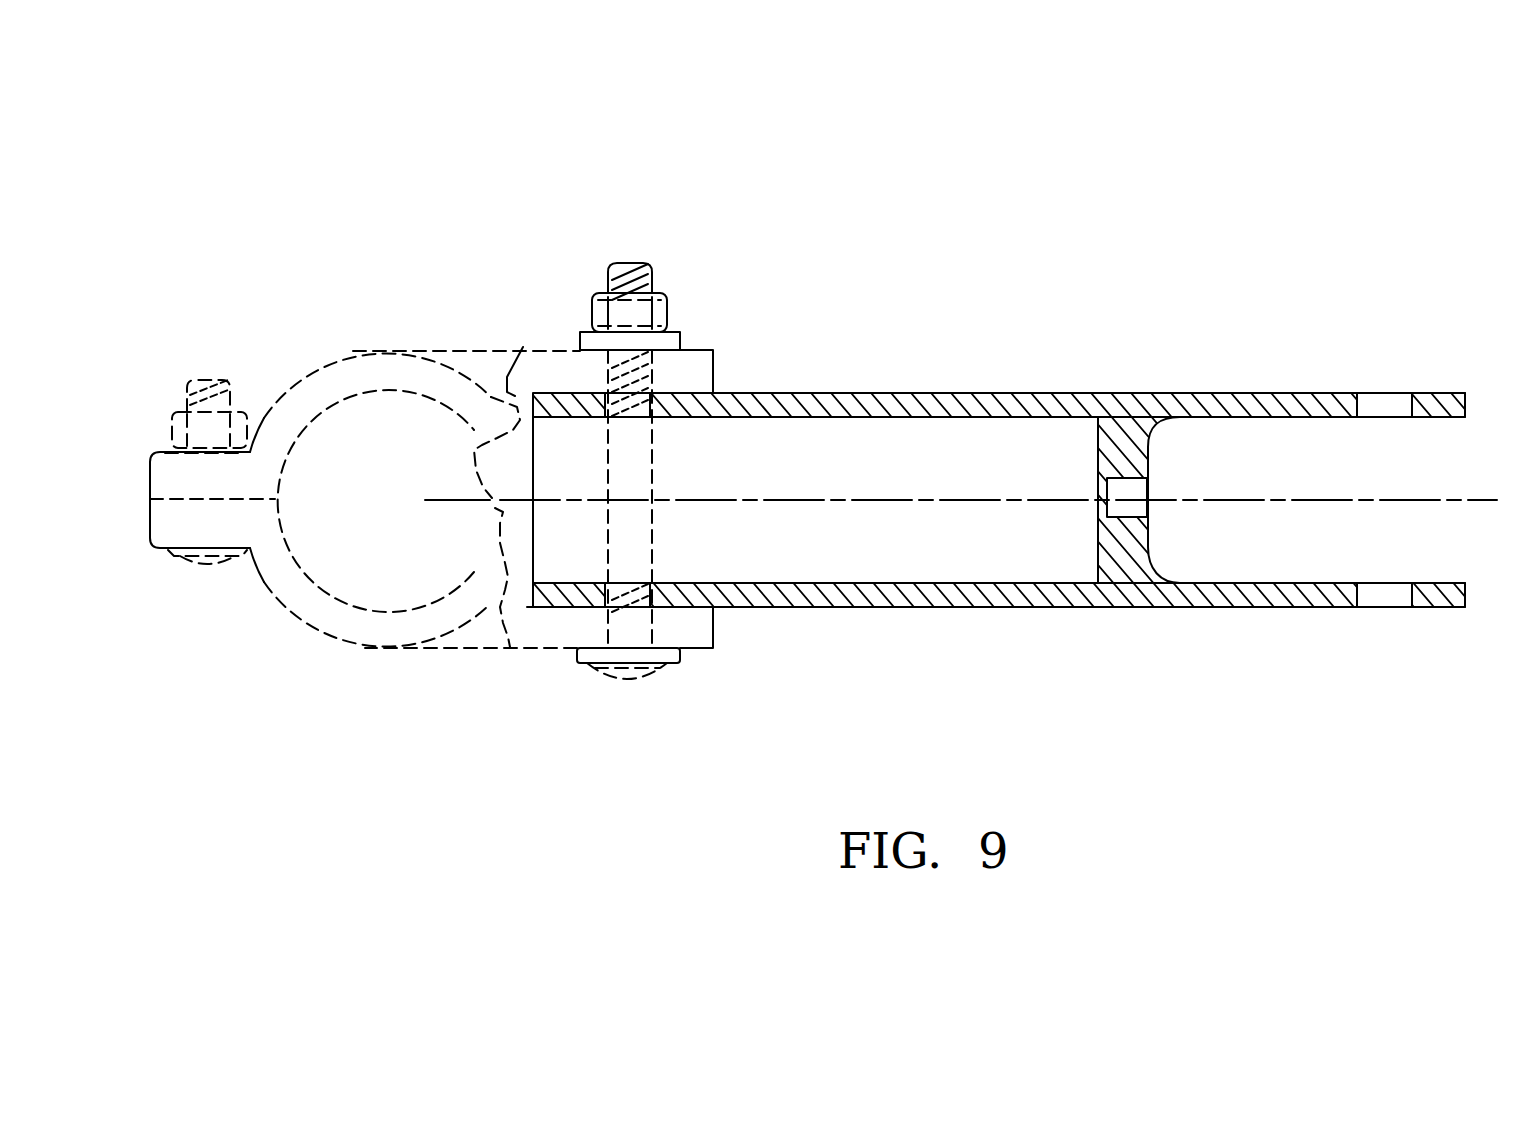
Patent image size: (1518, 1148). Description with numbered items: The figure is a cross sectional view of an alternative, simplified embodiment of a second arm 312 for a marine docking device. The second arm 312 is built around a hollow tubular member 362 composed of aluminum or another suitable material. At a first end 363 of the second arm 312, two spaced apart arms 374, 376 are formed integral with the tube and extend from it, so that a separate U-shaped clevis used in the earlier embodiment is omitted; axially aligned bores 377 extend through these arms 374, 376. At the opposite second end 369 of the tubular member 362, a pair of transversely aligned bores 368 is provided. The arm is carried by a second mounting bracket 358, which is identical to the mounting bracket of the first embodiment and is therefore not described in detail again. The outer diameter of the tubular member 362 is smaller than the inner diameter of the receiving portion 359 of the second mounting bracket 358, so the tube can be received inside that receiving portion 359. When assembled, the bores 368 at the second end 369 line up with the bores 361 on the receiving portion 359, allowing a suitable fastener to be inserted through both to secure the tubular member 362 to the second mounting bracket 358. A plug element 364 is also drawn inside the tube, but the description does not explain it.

The second arm 312 is at (953, 241).
The second mounting bracket 358 is at (383, 648).
The receiving portion 359 is at (518, 342).
The bores 361 is at (653, 377).
The hollow tubular member 362 is at (1137, 607).
The first end 363 is at (1467, 589).
The plug 364 is at (1118, 428).
The transversely aligned bores 368 is at (607, 392).
The second end 369 is at (520, 402).
The arm 374 is at (1240, 608).
The arm 376 is at (1247, 393).
The axially aligned bores 377 is at (1358, 593).